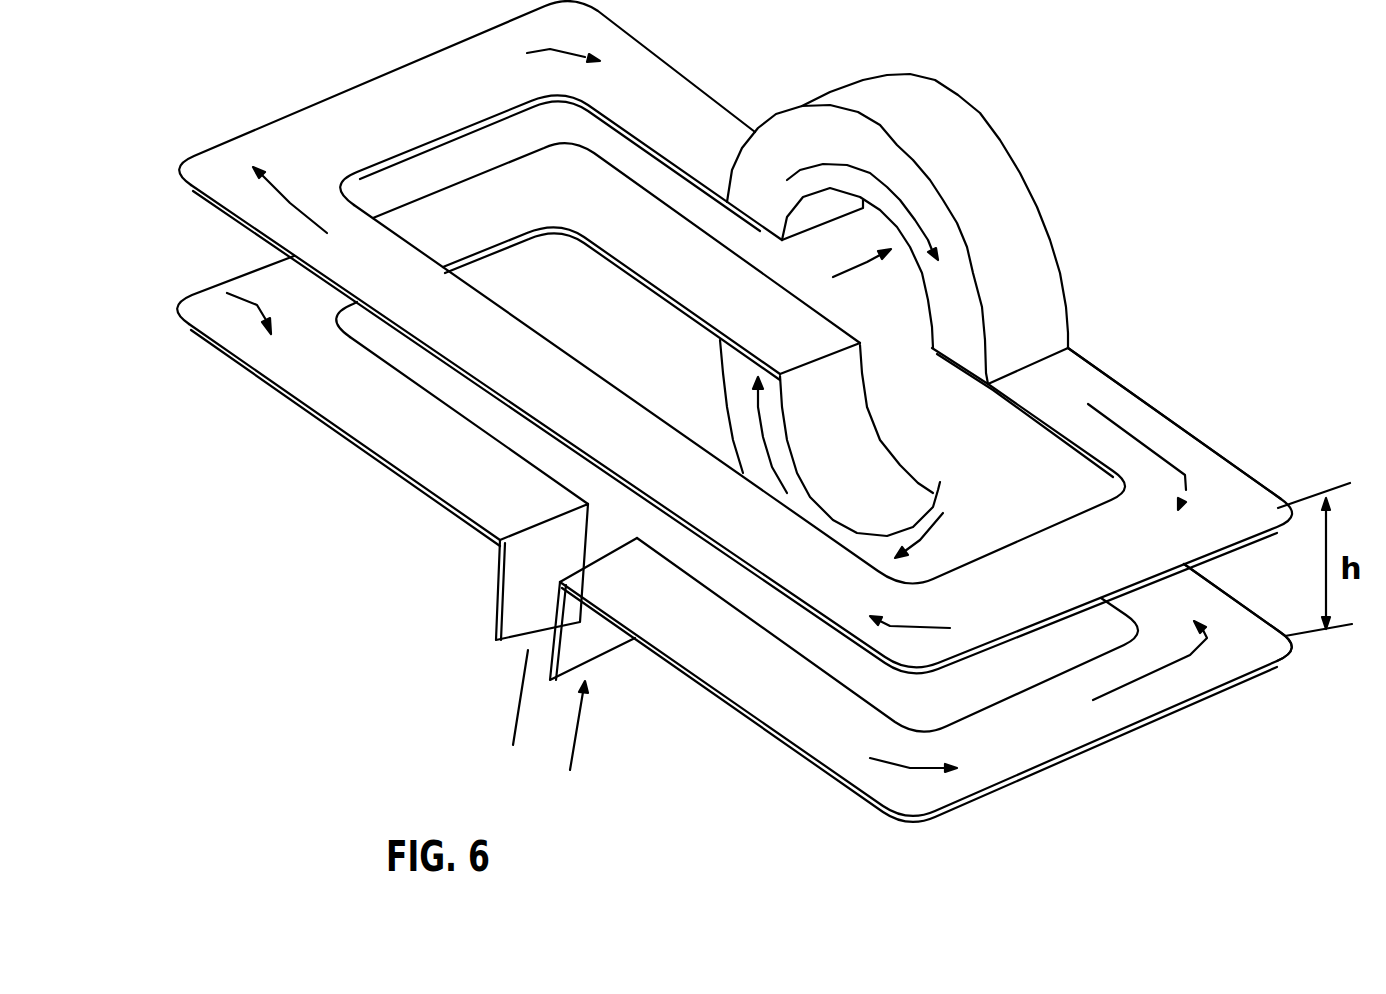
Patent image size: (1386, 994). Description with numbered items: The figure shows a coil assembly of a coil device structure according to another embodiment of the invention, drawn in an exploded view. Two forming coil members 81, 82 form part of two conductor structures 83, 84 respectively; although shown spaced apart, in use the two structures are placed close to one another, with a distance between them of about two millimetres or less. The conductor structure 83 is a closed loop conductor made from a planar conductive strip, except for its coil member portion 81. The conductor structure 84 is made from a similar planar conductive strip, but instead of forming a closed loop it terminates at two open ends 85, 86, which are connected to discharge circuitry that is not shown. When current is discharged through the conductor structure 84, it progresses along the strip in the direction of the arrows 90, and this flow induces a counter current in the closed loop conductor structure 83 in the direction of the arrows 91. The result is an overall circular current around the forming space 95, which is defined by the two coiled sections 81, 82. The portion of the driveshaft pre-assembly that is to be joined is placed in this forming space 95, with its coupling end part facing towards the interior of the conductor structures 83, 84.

The forming coil member 81 is at (960, 130).
The forming coil member 82 is at (983, 527).
The closed loop conductor structure 83 is at (1152, 404).
The conductor structure 84 is at (1267, 676).
The open end 85 is at (587, 637).
The open end 86 is at (500, 583).
The arrows 90 is at (195, 313).
The arrows 91 is at (253, 185).
The forming space 95 is at (841, 272).